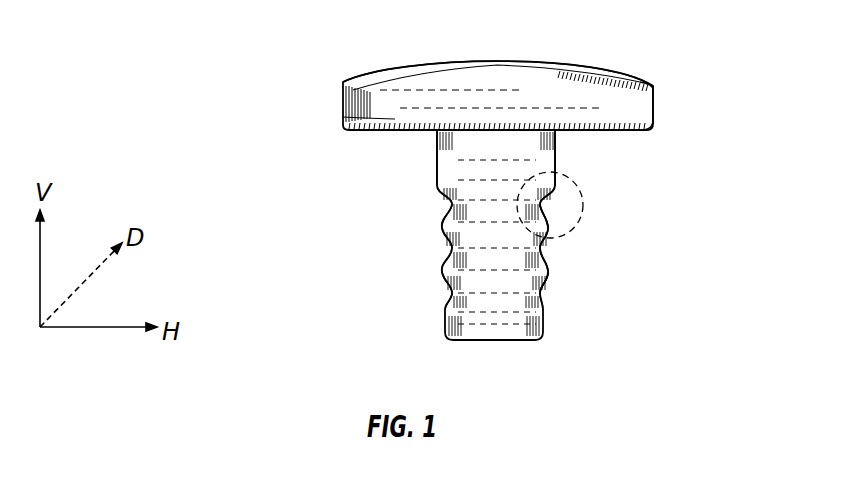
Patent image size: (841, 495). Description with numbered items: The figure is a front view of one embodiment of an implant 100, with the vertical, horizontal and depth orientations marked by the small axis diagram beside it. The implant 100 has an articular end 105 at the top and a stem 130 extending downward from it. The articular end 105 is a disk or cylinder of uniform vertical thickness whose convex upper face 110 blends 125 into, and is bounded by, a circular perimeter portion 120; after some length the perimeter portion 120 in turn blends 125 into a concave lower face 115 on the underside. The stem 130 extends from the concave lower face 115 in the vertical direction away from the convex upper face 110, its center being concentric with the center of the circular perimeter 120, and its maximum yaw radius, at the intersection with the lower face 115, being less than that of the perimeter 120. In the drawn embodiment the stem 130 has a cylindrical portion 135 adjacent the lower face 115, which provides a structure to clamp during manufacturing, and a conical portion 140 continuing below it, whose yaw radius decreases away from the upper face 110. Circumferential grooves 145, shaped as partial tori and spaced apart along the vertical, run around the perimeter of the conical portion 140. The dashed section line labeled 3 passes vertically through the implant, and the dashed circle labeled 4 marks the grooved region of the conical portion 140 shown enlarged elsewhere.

The implant 100 is at (290, 58).
The articular end 105 is at (337, 60).
The convex upper face 110 is at (588, 73).
The concave lower face 115 is at (607, 138).
The circular perimeter portion 120 is at (632, 108).
The blend 125 is at (653, 82).
The stem 130 is at (354, 133).
The cylindrical portion 135 is at (433, 148).
The conical portion 140 is at (433, 173).
The circumferential grooves 145 is at (546, 294).
The section line 3- 3 is at (494, 340).
The detail region 4 is at (582, 202).